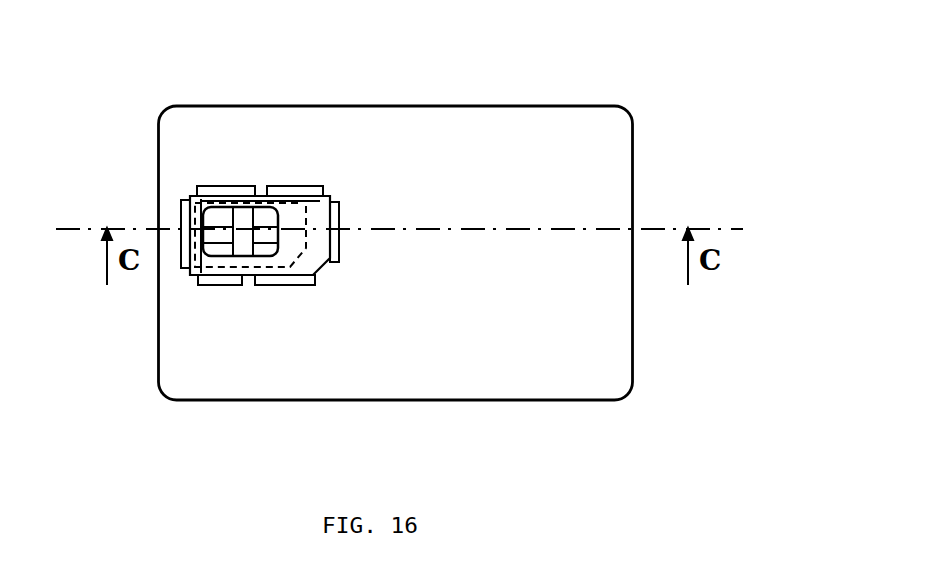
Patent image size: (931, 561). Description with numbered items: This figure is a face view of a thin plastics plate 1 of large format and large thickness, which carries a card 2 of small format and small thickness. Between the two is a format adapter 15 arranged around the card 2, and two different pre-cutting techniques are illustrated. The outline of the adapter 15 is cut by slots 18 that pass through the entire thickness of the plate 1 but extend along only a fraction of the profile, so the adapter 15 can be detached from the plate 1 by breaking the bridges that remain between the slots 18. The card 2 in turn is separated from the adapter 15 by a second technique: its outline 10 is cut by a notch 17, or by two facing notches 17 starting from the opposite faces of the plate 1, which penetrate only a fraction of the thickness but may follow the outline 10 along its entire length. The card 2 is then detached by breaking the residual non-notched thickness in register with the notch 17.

The plate 1 is at (437, 116).
The card 2 is at (203, 210).
The format adapter 15 is at (318, 203).
The slots 18 is at (295, 192).
The outline 10 is at (160, 263).
The notch 17 is at (203, 263).